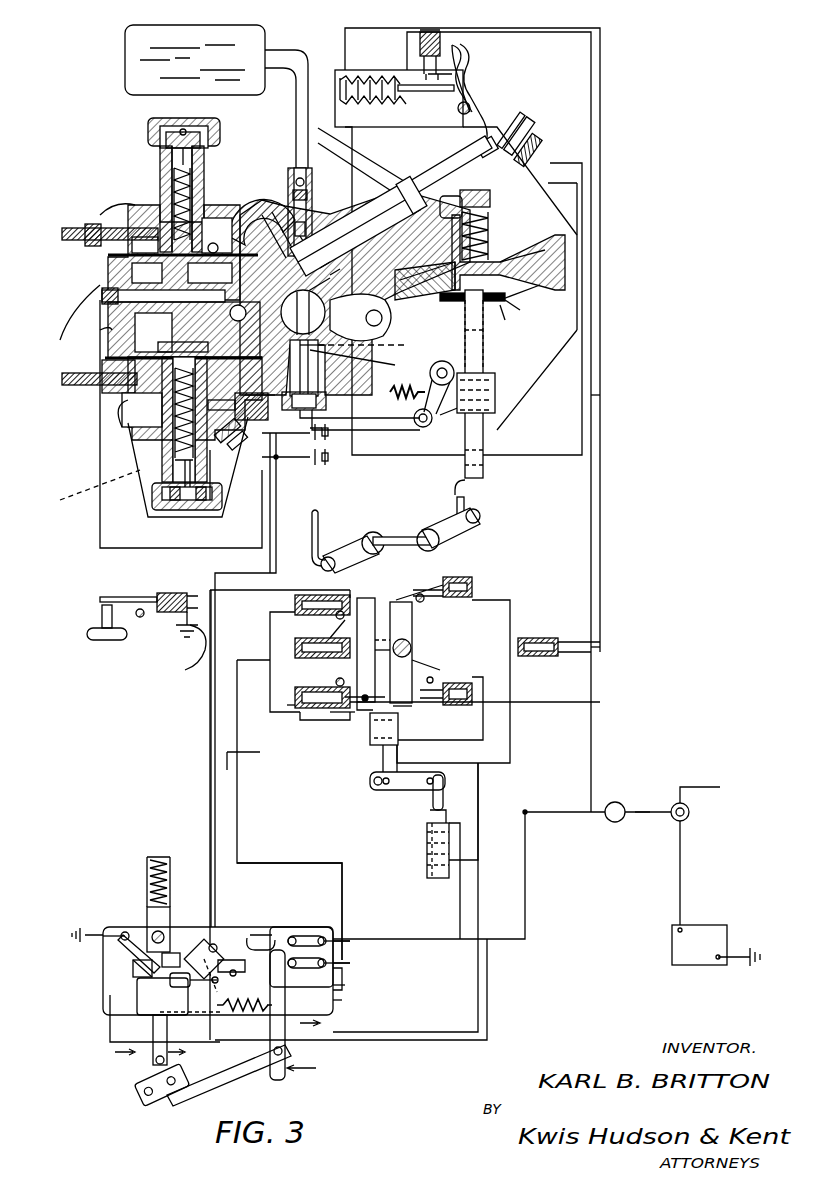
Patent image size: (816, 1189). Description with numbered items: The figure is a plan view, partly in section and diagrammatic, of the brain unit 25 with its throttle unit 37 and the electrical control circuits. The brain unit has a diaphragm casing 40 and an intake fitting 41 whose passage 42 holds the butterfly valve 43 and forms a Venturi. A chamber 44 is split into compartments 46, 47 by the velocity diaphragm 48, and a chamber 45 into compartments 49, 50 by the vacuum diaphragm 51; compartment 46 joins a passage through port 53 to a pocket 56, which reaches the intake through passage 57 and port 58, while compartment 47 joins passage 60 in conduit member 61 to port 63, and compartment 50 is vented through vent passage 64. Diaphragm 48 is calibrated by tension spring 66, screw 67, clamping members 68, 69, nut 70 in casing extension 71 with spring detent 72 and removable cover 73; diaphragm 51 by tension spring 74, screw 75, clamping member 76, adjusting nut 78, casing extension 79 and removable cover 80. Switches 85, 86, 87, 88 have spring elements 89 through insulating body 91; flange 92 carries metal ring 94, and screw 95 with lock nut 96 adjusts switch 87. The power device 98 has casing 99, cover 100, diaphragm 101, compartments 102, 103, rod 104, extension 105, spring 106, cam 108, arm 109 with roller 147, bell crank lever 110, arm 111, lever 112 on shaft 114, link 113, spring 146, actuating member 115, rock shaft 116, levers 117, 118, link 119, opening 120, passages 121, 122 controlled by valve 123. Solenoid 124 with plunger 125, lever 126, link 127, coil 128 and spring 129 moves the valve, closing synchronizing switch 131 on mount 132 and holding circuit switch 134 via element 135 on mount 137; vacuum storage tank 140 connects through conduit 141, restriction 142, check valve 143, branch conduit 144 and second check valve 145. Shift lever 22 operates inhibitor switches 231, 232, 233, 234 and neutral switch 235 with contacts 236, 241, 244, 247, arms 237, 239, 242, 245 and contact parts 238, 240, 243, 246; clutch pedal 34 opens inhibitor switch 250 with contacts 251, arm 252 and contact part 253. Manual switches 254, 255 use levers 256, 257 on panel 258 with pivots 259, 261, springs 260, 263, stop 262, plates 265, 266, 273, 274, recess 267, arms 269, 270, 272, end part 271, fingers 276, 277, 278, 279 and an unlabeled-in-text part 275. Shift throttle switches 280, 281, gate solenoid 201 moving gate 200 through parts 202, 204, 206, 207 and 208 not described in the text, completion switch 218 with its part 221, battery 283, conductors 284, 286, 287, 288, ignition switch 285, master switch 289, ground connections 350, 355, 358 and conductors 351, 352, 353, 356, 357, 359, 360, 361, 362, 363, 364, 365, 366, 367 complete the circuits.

The vacuum storage tank 140 is at (236, 30).
The conduit 141 is at (290, 136).
The restriction 142 is at (309, 190).
The second check valve 145 is at (308, 222).
The branch conduit 144 is at (340, 141).
The check valve 143 is at (348, 160).
The spring 129 is at (396, 70).
The coil 128 is at (375, 80).
The solenoid 124 is at (350, 102).
The plunger 125 is at (416, 92).
The mount 137 is at (448, 38).
The holding circuit switch 134 is at (448, 58).
The element 135 is at (464, 68).
The link 127 is at (476, 94).
The pivoted lever 126 is at (478, 116).
The synchronizing switch 131 is at (530, 125).
The mount 132 is at (540, 150).
The conductor 353 is at (600, 126).
The conductor 357 is at (591, 325).
The conductor 363 is at (600, 390).
The conductor 352 is at (520, 455).
The conductor 362 is at (510, 420).
The throttle unit 37 is at (548, 267).
The removable cover 73 is at (150, 122).
The spring detent 72 is at (204, 146).
The nut 70 is at (158, 160).
The casing extension 71 is at (208, 165).
The tension spring 66 is at (158, 180).
The passage 60 is at (250, 212).
The conduit member 61 is at (272, 210).
The brain unit 25 is at (160, 204).
The electric switch 85 is at (120, 206).
The compartment 47 is at (217, 234).
The clamping member 69 is at (217, 245).
The insulating body 91 is at (100, 236).
The spring elements 89 is at (85, 244).
The port 53 is at (146, 272).
The clamping member 68 is at (223, 263).
The screw 67 is at (198, 273).
The compartment 46 is at (220, 275).
The pocket 56 is at (312, 258).
The valve 123 is at (428, 176).
The passage 121 is at (445, 207).
The passage 57 is at (323, 282).
The port 63 is at (303, 312).
The port 58 is at (360, 316).
The intake fitting 41 is at (318, 366).
The lever 112 is at (316, 384).
The shaft 114 is at (326, 402).
The link 113 is at (370, 432).
The passage 42 is at (361, 342).
The butterfly valve 43 is at (352, 358).
The roller 147 is at (442, 361).
The arm 109 is at (436, 362).
The bell crank lever 110 is at (432, 420).
The tension spring 146 is at (407, 384).
The arm 111 is at (430, 432).
The spring 106 is at (490, 198).
The extension 105 is at (490, 222).
The casing 99 is at (520, 248).
The power device 98 is at (498, 240).
The compartment 102 is at (456, 274).
The passage 122 is at (425, 280).
The diaphragm 101 is at (464, 289).
The cover 100 is at (508, 316).
The opening 120 is at (512, 306).
The compartment 103 is at (513, 319).
The rod 104 is at (484, 366).
The cam 108 is at (486, 384).
The link 119 is at (465, 500).
The actuating member 115 is at (318, 515).
The lever 118 is at (352, 545).
The rock shaft 116 is at (400, 538).
The lever 117 is at (465, 528).
The diaphragm 51 is at (184, 330).
The compartment 49 is at (230, 316).
The diaphragm 48 is at (100, 270).
The chamber 44 is at (100, 292).
The conductor 360 is at (98, 300).
The diaphragm casing 40 is at (100, 327).
The chamber 45 is at (100, 365).
The conductor 361 is at (80, 372).
The screw 75 is at (170, 352).
The clamping member 76 is at (220, 347).
The electric switch 86 is at (197, 398).
The electric switch 87 is at (240, 392).
The compartment 50 is at (173, 419).
The vent passage 64 is at (172, 455).
The flange 92 is at (170, 430).
The metal ring 94 is at (130, 425).
The tension spring 74 is at (140, 490).
The adjusting nut 78 is at (172, 505).
The removable cover 80 is at (200, 505).
The casing extension 79 is at (215, 478).
The screw 95 is at (238, 404).
The lock nut 96 is at (231, 443).
The electric switch 88 is at (286, 446).
The shift throttle switch 280 is at (328, 436).
The shift throttle switch 281 is at (328, 462).
The conductor 367 is at (270, 575).
The conductor 351 is at (210, 697).
The conductor 356 is at (525, 858).
The projecting arm 252 is at (122, 597).
The contacts 251 is at (166, 595).
The contact part 253 is at (100, 603).
The clutch pedal 34 is at (87, 634).
The inhibitor switch 250 is at (168, 615).
The ground connection 358 is at (185, 668).
The projecting arm 245 is at (323, 600).
The inhibitor switch 234 is at (318, 594).
The contacts 244 is at (322, 640).
The contact part 246 is at (342, 626).
The neutral position switch 235 is at (322, 688).
The contacts 247 is at (341, 672).
The projecting arm 239 is at (400, 594).
The inhibitor switch 232 is at (462, 598).
The contact part 240 is at (414, 606).
The gate 200 is at (411, 642).
The shift lever 22 is at (411, 648).
The contact part 243 is at (430, 662).
The inhibitor switch 233 is at (446, 686).
The projecting arm 242 is at (475, 713).
The coil 208 is at (398, 740).
The conductor 364 is at (510, 730).
The contacts 241 is at (520, 700).
The inhibitor switch 231 is at (300, 712).
The contacts 236 is at (335, 722).
The conductor 359 is at (290, 715).
The projecting arm 237 is at (350, 735).
The contact part 238 is at (365, 738).
The lever 206 is at (370, 786).
The armature 204 is at (406, 790).
The link 207 is at (443, 782).
The link 202 is at (446, 806).
The solenoid 201 is at (428, 838).
The completion switch 218 is at (530, 658).
The conductor 221 is at (602, 655).
The conductor 366 is at (565, 812).
The master switch 289 is at (618, 803).
The conductor 288 is at (641, 820).
The ignition switch 285 is at (690, 812).
The conductor 287 is at (708, 787).
The conductor 286 is at (681, 840).
The storage battery 283 is at (712, 925).
The conductor 284 is at (750, 950).
The conductor 365 is at (478, 985).
The ground connection 350 is at (92, 928).
The tension spring 260 is at (147, 872).
The pivot 259 is at (168, 930).
The contact plate 265 is at (135, 958).
The contact arm 269 is at (120, 940).
The end part 271 is at (133, 972).
The recess 267 is at (162, 996).
The contact plate 266 is at (110, 1015).
The lever 256 is at (153, 1030).
The manually operable switch 254 is at (156, 1064).
The contact arm 270 is at (212, 940).
The contact finger 278 is at (250, 934).
The stop 262 is at (208, 984).
The tension spring 263 is at (245, 1012).
The contact plate 274 is at (284, 990).
The pivot 261 is at (290, 927).
The contact plate 273 is at (294, 932).
The contact 275 is at (319, 980).
The contact finger 279 is at (239, 971).
The ground connection 355 is at (342, 894).
The contact finger 277 is at (342, 920).
The panel 258 is at (342, 966).
The contact finger 276 is at (342, 984).
The lever 257 is at (340, 1000).
The manually operable switch 255 is at (316, 1071).
The contact arm 272 is at (208, 1030).